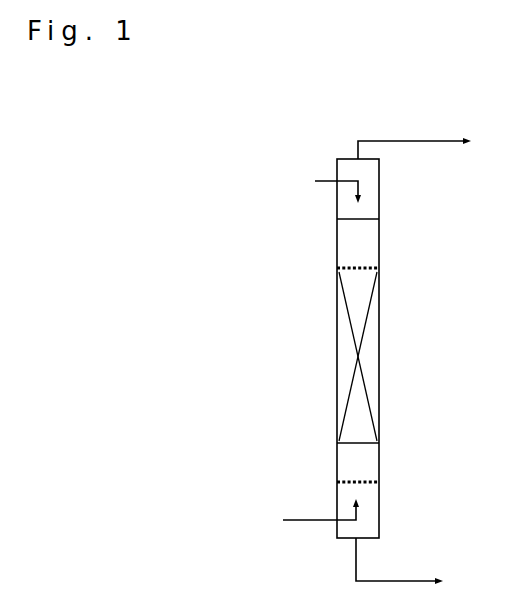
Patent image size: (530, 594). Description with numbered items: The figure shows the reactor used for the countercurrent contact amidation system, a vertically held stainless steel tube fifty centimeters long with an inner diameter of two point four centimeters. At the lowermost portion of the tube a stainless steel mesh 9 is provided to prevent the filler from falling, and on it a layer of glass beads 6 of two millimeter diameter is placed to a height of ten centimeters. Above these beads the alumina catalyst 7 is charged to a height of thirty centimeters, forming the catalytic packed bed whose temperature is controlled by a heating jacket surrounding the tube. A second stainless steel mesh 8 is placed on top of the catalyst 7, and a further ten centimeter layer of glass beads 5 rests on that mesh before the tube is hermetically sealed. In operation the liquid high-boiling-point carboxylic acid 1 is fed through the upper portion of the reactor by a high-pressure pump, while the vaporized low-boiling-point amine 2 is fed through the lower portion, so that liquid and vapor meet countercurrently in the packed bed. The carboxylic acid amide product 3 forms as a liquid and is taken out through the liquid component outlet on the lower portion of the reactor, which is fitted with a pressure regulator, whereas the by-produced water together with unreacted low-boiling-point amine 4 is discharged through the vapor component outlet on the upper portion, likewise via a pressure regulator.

The high-boiling-point carboxylic acid 1 is at (325, 187).
The low-boiling-point amine 2 is at (308, 514).
The product (carboxylic acid amide) 3 is at (413, 564).
The low-boiling-point amine plus water 4 is at (426, 146).
The glass beads 5 is at (400, 226).
The glass beads 6 is at (398, 442).
The catalyst 7 is at (400, 273).
The mesh 8 is at (331, 273).
The mesh 9 is at (328, 481).